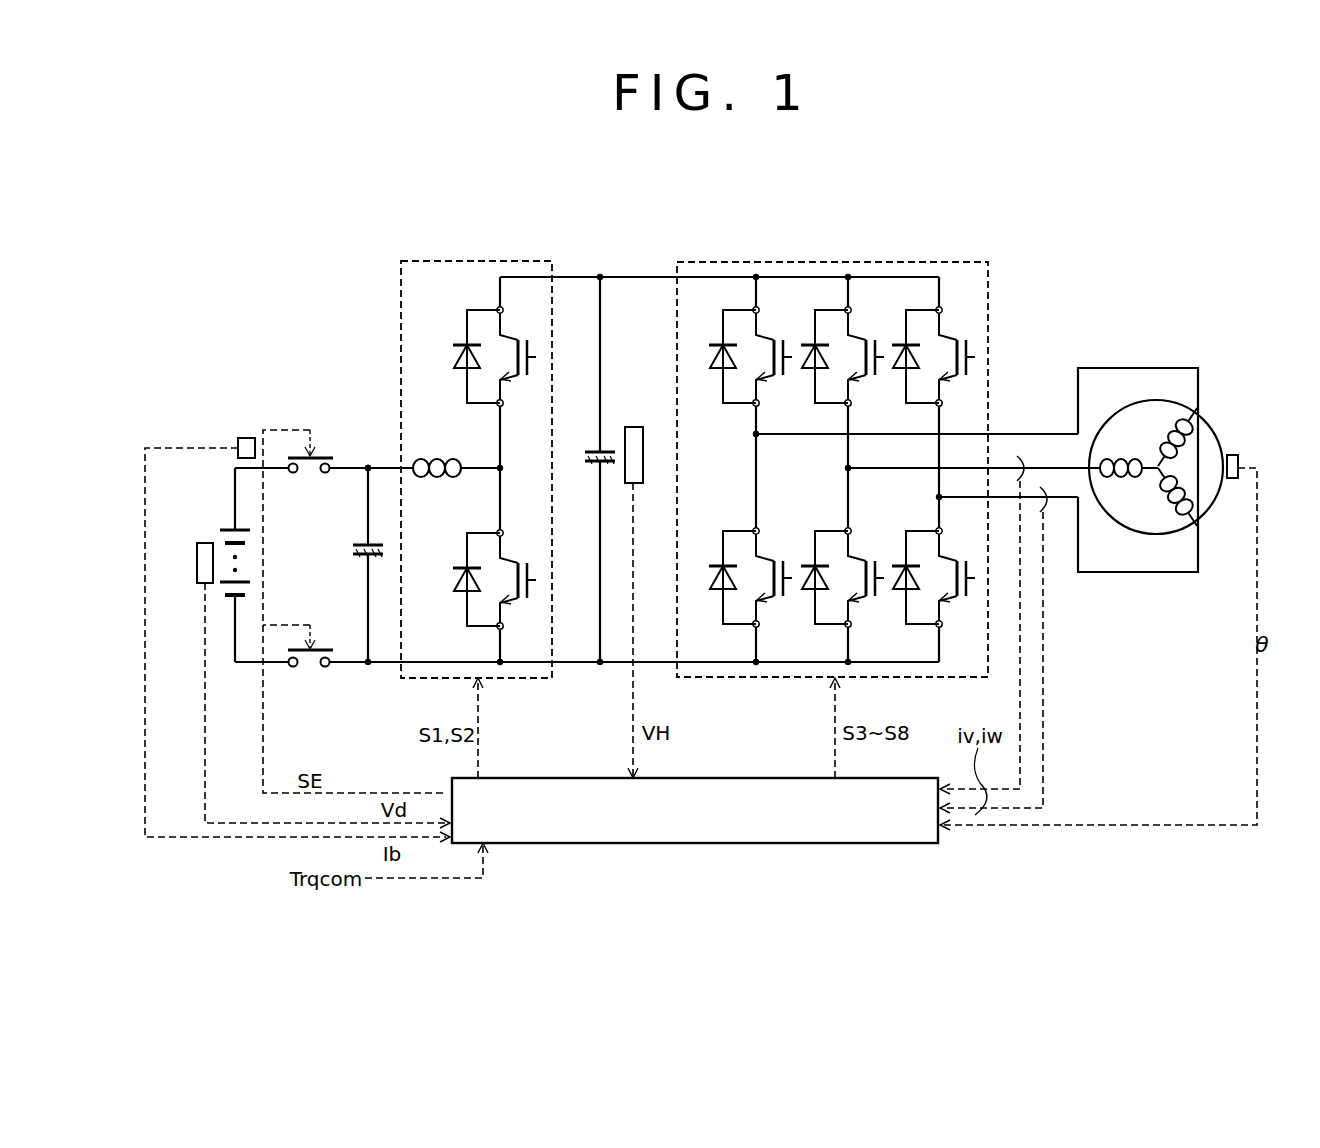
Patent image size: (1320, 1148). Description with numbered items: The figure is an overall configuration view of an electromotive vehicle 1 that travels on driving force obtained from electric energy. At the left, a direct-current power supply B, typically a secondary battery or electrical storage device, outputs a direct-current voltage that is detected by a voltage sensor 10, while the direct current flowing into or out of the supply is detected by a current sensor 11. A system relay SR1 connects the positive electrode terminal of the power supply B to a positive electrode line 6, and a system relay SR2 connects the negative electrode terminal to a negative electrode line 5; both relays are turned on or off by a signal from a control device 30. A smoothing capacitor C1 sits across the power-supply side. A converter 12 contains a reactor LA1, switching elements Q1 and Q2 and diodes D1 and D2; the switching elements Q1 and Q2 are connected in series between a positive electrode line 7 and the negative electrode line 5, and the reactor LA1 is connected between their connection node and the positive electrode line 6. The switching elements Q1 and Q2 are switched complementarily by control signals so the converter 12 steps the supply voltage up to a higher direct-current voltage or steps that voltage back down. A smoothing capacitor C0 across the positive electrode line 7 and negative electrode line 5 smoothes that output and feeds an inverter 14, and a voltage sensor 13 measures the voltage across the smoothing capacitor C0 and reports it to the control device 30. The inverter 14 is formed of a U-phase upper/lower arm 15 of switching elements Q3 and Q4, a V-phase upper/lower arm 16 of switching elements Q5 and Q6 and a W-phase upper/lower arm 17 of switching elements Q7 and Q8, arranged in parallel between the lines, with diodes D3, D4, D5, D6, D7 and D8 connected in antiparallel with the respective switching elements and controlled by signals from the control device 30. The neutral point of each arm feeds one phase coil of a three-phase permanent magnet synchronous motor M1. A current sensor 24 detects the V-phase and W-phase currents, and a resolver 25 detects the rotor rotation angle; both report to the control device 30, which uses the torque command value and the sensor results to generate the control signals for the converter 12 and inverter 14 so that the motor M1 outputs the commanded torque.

The vehicle 1 is at (706, 191).
The negative electrode line 5 is at (580, 663).
The positive electrode line 6 is at (370, 466).
The positive electrode line 7 is at (633, 277).
The voltage sensor 10 is at (201, 543).
The current sensor 11 is at (246, 438).
The converter 12 is at (476, 444).
The voltage sensor 13 is at (633, 427).
The inverter 14 is at (832, 444).
The U-phase upper/lower arm 15 is at (717, 452).
The V-phase upper/lower arm 16 is at (808, 487).
The W-phase upper/lower arm 17 is at (902, 514).
The current sensor 24 is at (1020, 455).
The resolver 25 is at (1240, 455).
The control device 30 is at (848, 843).
The direct-current power supply B is at (227, 528).
The system relay SR1 is at (326, 458).
The system relay SR2 is at (326, 650).
The smoothing capacitor C1 is at (362, 545).
The reactor LA1 is at (432, 460).
The smoothing capacitor C0 is at (594, 450).
The motor M1 is at (1216, 428).
The switching element Q1 is at (517, 356).
The switching element Q2 is at (517, 579).
The switching element Q3 is at (773, 356).
The switching element Q4 is at (773, 577).
The switching element Q5 is at (865, 356).
The switching element Q6 is at (865, 577).
The switching element Q7 is at (956, 356).
The switching element Q8 is at (956, 577).
The diode D1 is at (461, 356).
The diode D2 is at (461, 579).
The diode D3 is at (722, 356).
The diode D4 is at (722, 577).
The diode D5 is at (814, 356).
The diode D6 is at (814, 577).
The diode D7 is at (905, 356).
The diode D8 is at (905, 577).